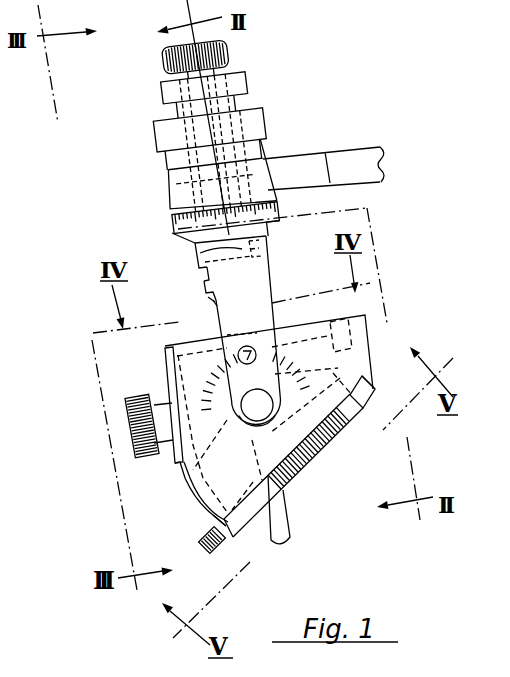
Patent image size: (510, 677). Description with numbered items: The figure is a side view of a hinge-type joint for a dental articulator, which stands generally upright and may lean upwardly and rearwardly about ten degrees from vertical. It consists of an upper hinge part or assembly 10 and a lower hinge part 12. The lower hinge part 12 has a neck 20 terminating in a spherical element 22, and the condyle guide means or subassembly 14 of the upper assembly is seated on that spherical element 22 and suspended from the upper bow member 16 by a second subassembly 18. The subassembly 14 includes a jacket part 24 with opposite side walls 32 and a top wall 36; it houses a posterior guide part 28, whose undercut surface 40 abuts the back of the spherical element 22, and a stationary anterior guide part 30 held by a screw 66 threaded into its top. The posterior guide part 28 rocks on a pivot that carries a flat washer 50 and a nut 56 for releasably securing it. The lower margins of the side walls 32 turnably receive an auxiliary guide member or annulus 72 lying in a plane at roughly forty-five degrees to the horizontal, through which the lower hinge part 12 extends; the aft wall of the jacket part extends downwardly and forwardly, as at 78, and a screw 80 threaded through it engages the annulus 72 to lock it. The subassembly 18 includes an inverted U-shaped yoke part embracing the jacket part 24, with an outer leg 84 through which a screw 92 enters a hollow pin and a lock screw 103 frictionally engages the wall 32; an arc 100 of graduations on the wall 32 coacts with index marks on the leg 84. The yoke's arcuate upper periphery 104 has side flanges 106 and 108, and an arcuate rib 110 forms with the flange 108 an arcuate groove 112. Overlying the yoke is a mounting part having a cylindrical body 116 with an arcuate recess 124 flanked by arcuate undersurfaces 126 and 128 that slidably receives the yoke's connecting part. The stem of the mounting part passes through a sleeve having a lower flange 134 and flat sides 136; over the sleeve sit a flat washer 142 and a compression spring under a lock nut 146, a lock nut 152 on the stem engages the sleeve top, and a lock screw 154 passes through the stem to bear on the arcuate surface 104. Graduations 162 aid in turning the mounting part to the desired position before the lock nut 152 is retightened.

The upper hinge part 10 is at (118, 240).
The lower hinge part 12 is at (327, 497).
The condyle guide means 14 is at (370, 353).
The upper bow member 16 is at (380, 172).
The second subassembly 18 is at (316, 134).
The neck 20 is at (286, 514).
The spherical element 22 is at (277, 411).
The jacket part 24 is at (176, 462).
The posterior guide part 28 is at (179, 510).
The anterior guide part 30 is at (370, 434).
The side walls 32 is at (370, 352).
The top wall 36 is at (280, 328).
The undercut surface 40 is at (265, 433).
The flat washer 50 is at (165, 378).
The nut 56 is at (138, 394).
The screw 66 is at (325, 320).
The annulus 72 is at (311, 461).
The lower marginal area of aft wall 78 is at (208, 511).
The screw 80 is at (203, 542).
The yoke leg 84 is at (266, 278).
The screw 92 is at (262, 403).
The arc of graduations 100 is at (295, 368).
The lock screw 103 is at (251, 344).
The arcuate upper periphery 104 is at (192, 255).
The side flange 106 is at (278, 264).
The side flange 108 is at (181, 297).
The arcuate rib 110 is at (213, 302).
The arcuate groove 112 is at (207, 293).
The cylindrical body 116 is at (190, 260).
The arcuate recess 124 is at (184, 239).
The arcuate undersurface 126 is at (281, 250).
The arcuate undersurface 128 is at (202, 276).
The flange 134 is at (270, 201).
The flat sides 136 is at (200, 182).
The flat washer 142 is at (183, 168).
The lock nut 146 is at (165, 131).
The lock nut 152 is at (246, 80).
The lock screw 154 is at (229, 51).
The graduations 162 is at (178, 219).